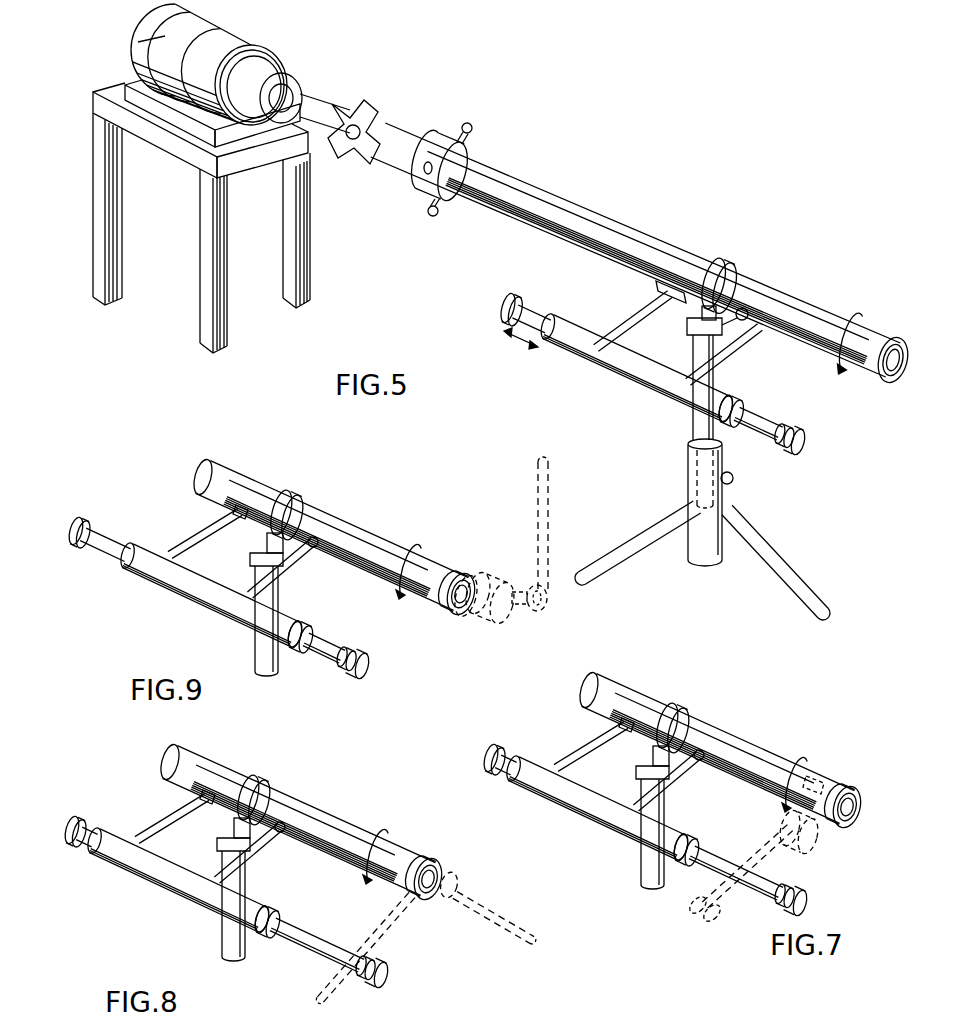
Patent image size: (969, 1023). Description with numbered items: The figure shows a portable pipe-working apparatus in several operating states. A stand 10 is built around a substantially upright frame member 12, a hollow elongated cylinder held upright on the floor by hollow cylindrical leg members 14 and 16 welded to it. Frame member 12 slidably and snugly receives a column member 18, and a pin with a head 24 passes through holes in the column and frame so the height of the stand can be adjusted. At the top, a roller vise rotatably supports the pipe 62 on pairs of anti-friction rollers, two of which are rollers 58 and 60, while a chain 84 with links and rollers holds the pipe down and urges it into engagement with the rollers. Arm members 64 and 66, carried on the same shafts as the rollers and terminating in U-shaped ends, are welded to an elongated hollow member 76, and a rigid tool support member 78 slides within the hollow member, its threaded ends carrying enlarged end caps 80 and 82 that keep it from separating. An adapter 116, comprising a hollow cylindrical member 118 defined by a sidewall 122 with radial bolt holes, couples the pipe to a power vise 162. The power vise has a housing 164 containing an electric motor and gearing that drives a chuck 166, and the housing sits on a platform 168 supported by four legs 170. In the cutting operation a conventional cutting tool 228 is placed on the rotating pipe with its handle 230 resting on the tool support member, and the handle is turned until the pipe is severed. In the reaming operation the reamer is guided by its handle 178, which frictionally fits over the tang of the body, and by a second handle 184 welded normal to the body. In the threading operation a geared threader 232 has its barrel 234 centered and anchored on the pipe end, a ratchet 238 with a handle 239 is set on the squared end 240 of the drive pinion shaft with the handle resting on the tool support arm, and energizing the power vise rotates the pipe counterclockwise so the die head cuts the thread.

In FIG. 5, the stand 10 is at (702, 529).
In FIG. 5, the frame member 12 is at (705, 556).
In FIG. 5, the leg member 14 is at (775, 566).
In FIG. 5, the leg member 16 is at (610, 549).
In FIG. 5, the column member 18 is at (718, 436).
In FIG. 5, the head 24 is at (733, 482).
In FIG. 5, the roller 58 is at (664, 278).
In FIG. 5, the roller 60 is at (745, 311).
In FIG. 5, the pipe 62 is at (572, 192).
In FIG. 5, the arm member 64 is at (632, 325).
In FIG. 5, the arm member 66 is at (733, 358).
In FIG. 5, the hollow member 76 is at (660, 386).
In FIG. 7, the hollow member 76 is at (597, 813).
In FIG. 5, the tool support member 78 is at (756, 421).
In FIG. 8, the tool support member 78 is at (315, 957).
In FIG. 7, the tool support member 78 is at (646, 837).
In FIG. 5, the end cap 80 is at (498, 305).
In FIG. 5, the end cap 82 is at (801, 446).
In FIG. 5, the chain 84 is at (720, 264).
In FIG. 5, the adapter 116 is at (424, 150).
In FIG. 5, the hollow member 118 is at (420, 178).
In FIG. 5, the sidewall 122 is at (440, 145).
In FIG. 5, the power vise 162 is at (228, 84).
In FIG. 5, the housing 164 is at (216, 33).
In FIG. 5, the chuck 166 is at (288, 75).
In FIG. 5, the platform 168 is at (224, 218).
In FIG. 5, the legs 170 is at (110, 286).
In FIG. 8, the handle 178 is at (394, 942).
In FIG. 8, the handle 184 is at (482, 916).
In FIG. 7, the cutting tool 228 is at (814, 832).
In FIG. 7, the handle 230 is at (699, 914).
In FIG. 9, the geared threader 232 is at (480, 548).
In FIG. 9, the barrel 234 is at (438, 613).
In FIG. 9, the ratchet 238 is at (566, 610).
In FIG. 9, the handle 239 is at (538, 482).
In FIG. 9, the squared end 240 is at (527, 616).